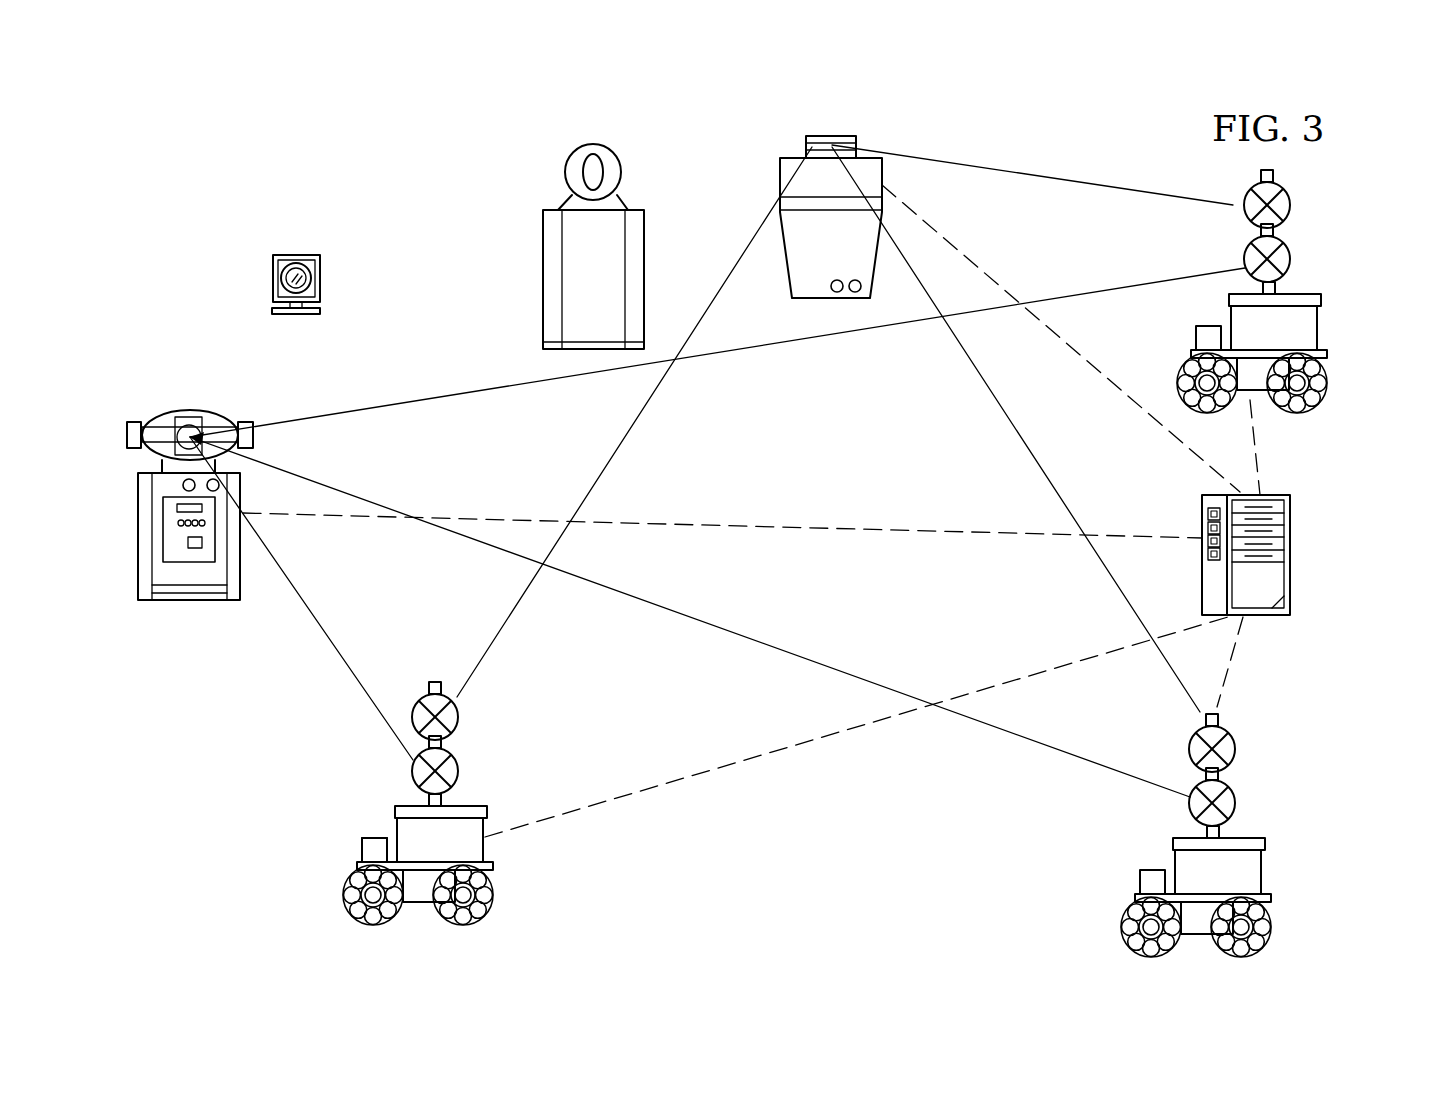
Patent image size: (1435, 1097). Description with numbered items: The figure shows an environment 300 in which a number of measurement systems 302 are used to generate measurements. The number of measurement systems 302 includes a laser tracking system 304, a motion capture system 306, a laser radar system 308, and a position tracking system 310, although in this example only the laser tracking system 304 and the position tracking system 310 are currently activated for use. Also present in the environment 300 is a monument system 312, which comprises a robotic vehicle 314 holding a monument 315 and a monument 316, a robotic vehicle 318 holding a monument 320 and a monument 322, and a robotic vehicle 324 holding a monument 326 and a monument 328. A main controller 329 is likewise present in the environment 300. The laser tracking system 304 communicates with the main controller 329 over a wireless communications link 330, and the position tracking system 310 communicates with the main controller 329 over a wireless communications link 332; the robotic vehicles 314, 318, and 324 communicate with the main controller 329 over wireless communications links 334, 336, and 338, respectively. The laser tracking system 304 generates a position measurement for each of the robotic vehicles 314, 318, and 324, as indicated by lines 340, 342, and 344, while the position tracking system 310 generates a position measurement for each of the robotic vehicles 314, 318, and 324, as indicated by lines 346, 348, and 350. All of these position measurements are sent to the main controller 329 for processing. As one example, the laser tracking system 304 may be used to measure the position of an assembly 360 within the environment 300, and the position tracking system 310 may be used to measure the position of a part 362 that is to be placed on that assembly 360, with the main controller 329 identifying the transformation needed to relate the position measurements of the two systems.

The environment 300 is at (150, 168).
The number of measurement systems 302 is at (441, 166).
The laser tracking system 304 is at (175, 508).
The motion capture system 306 is at (300, 254).
The laser radar system 308 is at (592, 144).
The position tracking system 310 is at (831, 135).
The monument system 312 is at (463, 803).
The robotic vehicle 314 is at (372, 816).
The monument 315 is at (459, 775).
The monument 316 is at (459, 721).
The robotic vehicle 318 is at (1306, 291).
The monument 320 is at (1291, 262).
The monument 322 is at (1291, 208).
The robotic vehicle 324 is at (1208, 835).
The monument 326 is at (1237, 808).
The monument 328 is at (1237, 752).
The main controller 329 is at (1291, 552).
The wireless communications link 330 is at (813, 528).
The wireless communications link 332 is at (962, 254).
The wireless communications link 334 is at (761, 753).
The wireless communications link 336 is at (1257, 453).
The wireless communications link 338 is at (1238, 650).
The line 340 is at (312, 622).
The line 342 is at (806, 344).
The line 344 is at (774, 646).
The line 346 is at (741, 249).
The line 348 is at (1046, 174).
The line 350 is at (991, 391).
The assembly 360 is at (168, 568).
The part 362 is at (726, 53).